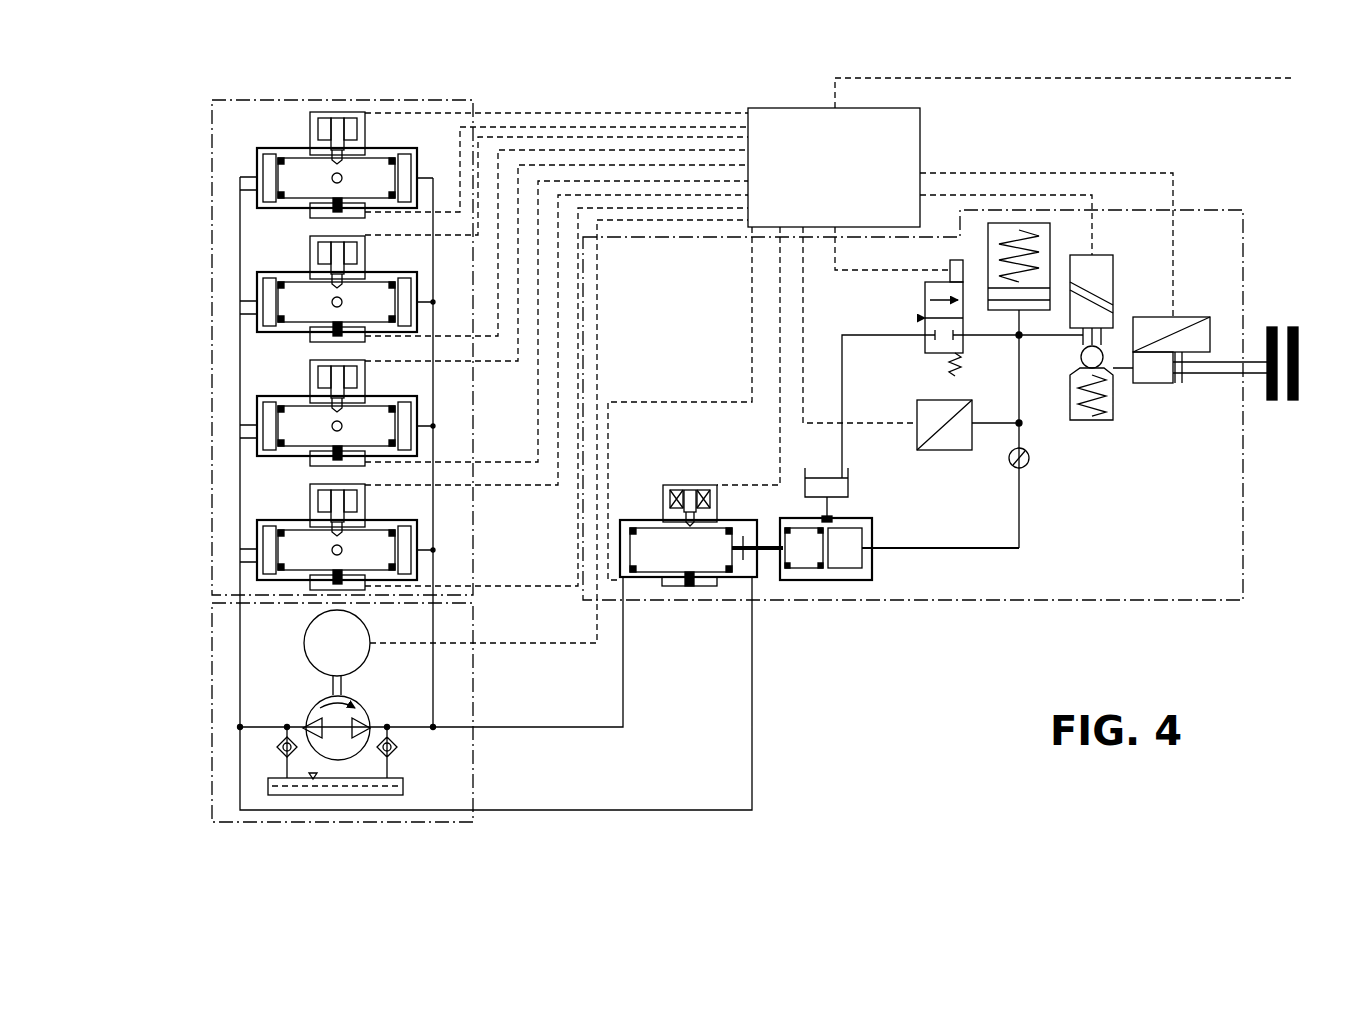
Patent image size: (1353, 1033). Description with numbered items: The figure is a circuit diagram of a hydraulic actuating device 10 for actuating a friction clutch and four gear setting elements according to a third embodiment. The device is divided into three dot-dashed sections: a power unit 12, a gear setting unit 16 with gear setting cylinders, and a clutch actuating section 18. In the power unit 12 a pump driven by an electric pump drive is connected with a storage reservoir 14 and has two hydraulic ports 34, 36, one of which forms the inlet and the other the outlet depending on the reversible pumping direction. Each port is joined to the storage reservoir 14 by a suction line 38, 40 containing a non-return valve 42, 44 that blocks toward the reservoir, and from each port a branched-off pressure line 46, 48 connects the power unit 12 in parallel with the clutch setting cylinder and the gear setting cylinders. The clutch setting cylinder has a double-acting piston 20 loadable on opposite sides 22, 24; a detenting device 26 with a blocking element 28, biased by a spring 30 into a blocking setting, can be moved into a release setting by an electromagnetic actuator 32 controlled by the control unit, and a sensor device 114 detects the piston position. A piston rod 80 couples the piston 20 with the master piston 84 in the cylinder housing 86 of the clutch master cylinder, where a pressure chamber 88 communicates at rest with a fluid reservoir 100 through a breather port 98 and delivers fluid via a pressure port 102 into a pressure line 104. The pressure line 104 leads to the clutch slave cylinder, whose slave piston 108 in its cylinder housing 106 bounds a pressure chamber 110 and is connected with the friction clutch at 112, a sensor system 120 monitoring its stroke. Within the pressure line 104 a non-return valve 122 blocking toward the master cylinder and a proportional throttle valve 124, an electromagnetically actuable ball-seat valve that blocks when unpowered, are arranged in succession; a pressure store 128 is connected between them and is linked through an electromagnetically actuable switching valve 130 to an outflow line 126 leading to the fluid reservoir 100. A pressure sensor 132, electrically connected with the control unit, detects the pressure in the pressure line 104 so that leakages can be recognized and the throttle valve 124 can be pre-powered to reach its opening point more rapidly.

The hydraulic actuating device 10 is at (1258, 195).
The power unit 12 is at (478, 795).
The storage reservoir 14 is at (403, 790).
The gear setting unit 16 is at (424, 97).
The clutch actuating section 18 is at (1243, 482).
The piston 20 is at (650, 553).
The side 22 is at (620, 548).
The side 24 is at (757, 577).
The detenting device 26 is at (687, 470).
The blocking element 28 is at (685, 490).
The spring 30 is at (688, 490).
The actuator 32 is at (717, 492).
The hydraulic port 34 is at (303, 727).
The hydraulic port 36 is at (370, 727).
The suction line 38 is at (280, 795).
The suction line 40 is at (385, 795).
The non-return valve 42 is at (277, 747).
The non-return valve 44 is at (397, 747).
The pressure line 46 is at (287, 727).
The pressure line 48 is at (400, 727).
The piston rod 80 is at (757, 548).
The master piston 84 is at (805, 580).
The cylinder housing 86 is at (838, 580).
The pressure chamber 88 is at (845, 548).
The breather port 98 is at (825, 522).
The fluid reservoir 100 is at (820, 472).
The pressure port 102 is at (872, 548).
The pressure line 104 is at (1019, 525).
The cylinder housing 106 is at (1133, 383).
The slave piston 108 is at (1180, 383).
The pressure chamber 110 is at (1135, 352).
The connection to friction clutch 112 is at (1215, 368).
The sensor device 114 is at (690, 590).
The sensor system 120 is at (1173, 315).
The non-return valve 122 is at (1010, 462).
The proportional throttle valve 124 is at (1113, 258).
The outflow line 126 is at (842, 410).
The pressure store 128 is at (1019, 223).
The switching valve 130 is at (925, 318).
The pressure sensor 132 is at (935, 450).